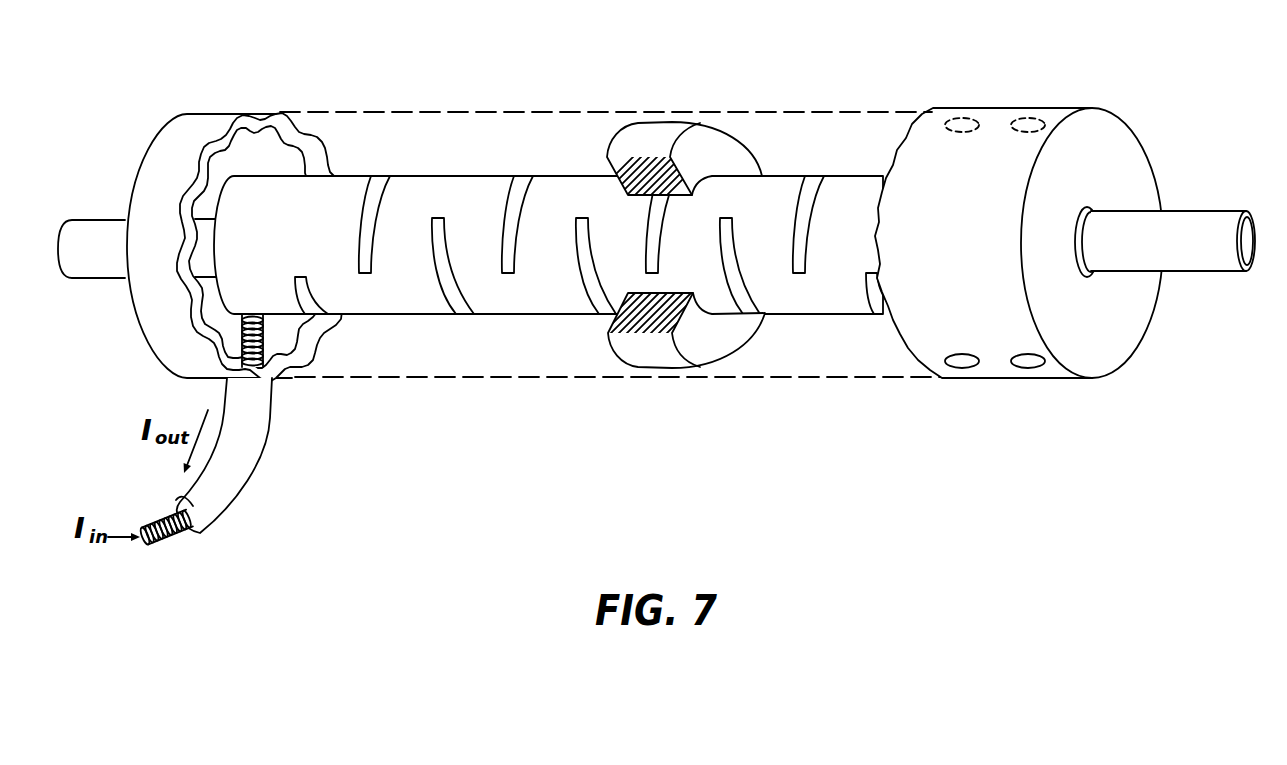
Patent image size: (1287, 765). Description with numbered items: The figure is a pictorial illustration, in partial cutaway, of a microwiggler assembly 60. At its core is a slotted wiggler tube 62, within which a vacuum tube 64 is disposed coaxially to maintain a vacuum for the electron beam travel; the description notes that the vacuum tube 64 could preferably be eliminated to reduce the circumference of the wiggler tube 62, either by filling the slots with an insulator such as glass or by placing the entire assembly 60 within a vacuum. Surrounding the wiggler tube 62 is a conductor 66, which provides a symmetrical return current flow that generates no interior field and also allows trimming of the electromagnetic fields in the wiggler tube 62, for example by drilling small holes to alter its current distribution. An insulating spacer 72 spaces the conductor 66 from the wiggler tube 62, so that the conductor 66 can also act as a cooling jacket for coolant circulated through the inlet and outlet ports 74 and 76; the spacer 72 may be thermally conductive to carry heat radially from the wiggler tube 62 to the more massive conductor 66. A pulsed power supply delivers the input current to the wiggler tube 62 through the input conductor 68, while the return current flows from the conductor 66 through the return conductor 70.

The microwiggler assembly 60 is at (722, 463).
The slotted wiggler tube 62 is at (520, 303).
The vacuum tube 64 is at (1187, 228).
The conductor 66 is at (213, 122).
The input conductor 68 is at (178, 543).
The return conductor 70 is at (218, 497).
The insulating spacer 72 is at (667, 132).
The inlet port 74 is at (962, 369).
The outlet port 76 is at (962, 117).